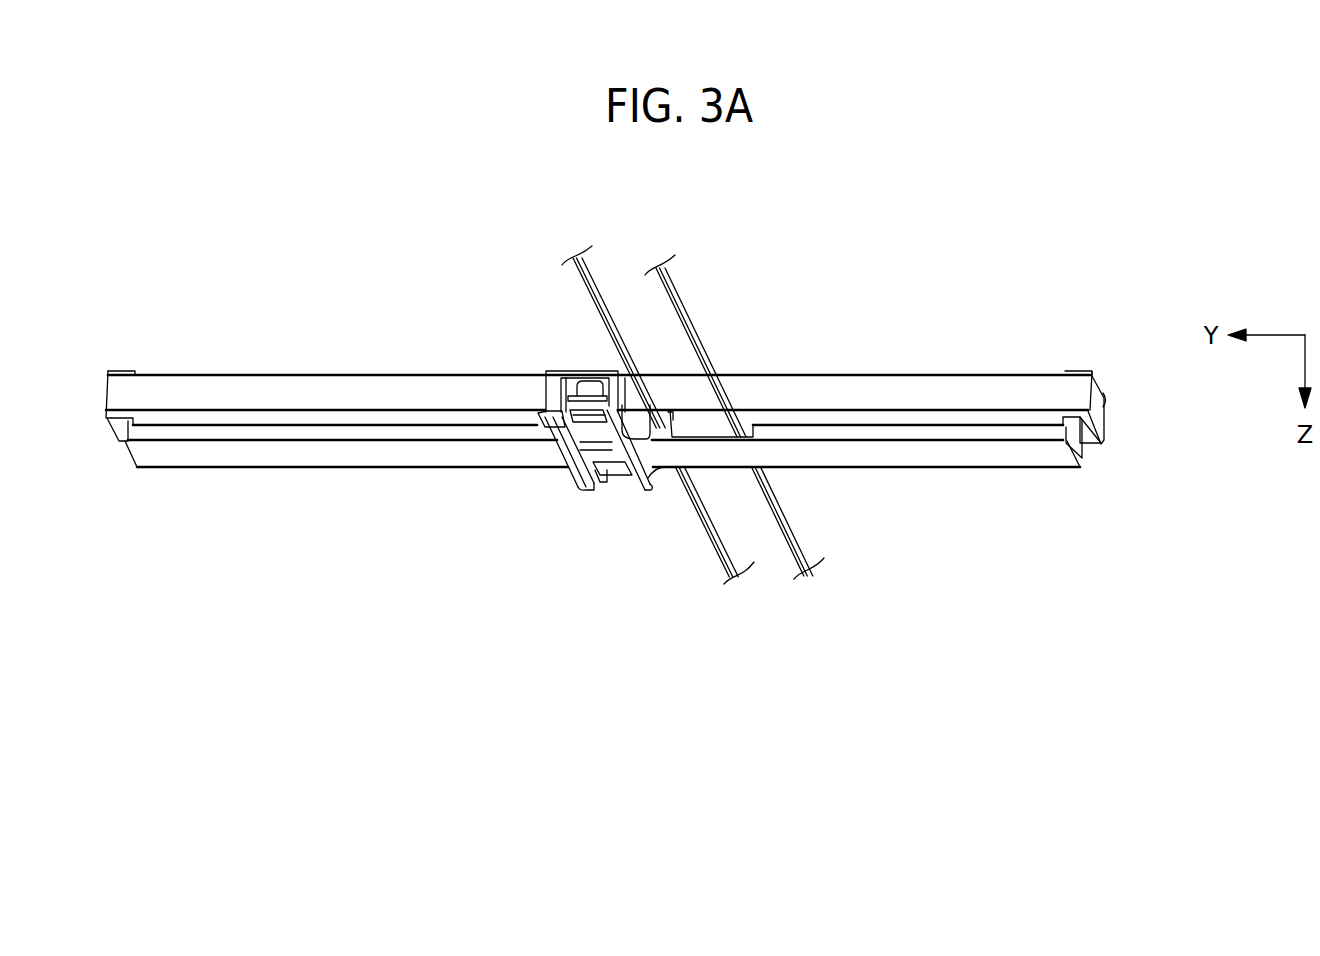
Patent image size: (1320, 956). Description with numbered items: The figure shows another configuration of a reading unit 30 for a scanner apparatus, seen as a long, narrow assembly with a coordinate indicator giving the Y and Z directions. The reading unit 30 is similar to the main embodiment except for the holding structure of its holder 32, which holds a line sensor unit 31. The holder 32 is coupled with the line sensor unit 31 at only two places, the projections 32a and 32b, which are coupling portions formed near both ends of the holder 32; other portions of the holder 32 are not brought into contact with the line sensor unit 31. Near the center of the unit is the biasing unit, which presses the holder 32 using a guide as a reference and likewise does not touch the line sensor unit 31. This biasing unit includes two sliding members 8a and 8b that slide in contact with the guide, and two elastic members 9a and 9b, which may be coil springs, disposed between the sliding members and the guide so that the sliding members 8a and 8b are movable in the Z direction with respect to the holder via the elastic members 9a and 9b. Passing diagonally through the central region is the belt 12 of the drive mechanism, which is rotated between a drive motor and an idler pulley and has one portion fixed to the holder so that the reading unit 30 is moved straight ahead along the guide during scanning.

The reading unit 30 is at (204, 304).
The line sensor unit 31 is at (947, 372).
The holder 32 is at (949, 469).
The projection 32a is at (118, 446).
The projection 32b is at (1090, 446).
The elastic member 9a is at (587, 368).
The elastic member 9b is at (646, 500).
The sliding member 8a is at (568, 467).
The sliding member 8b is at (603, 480).
The belt 12 is at (699, 328).